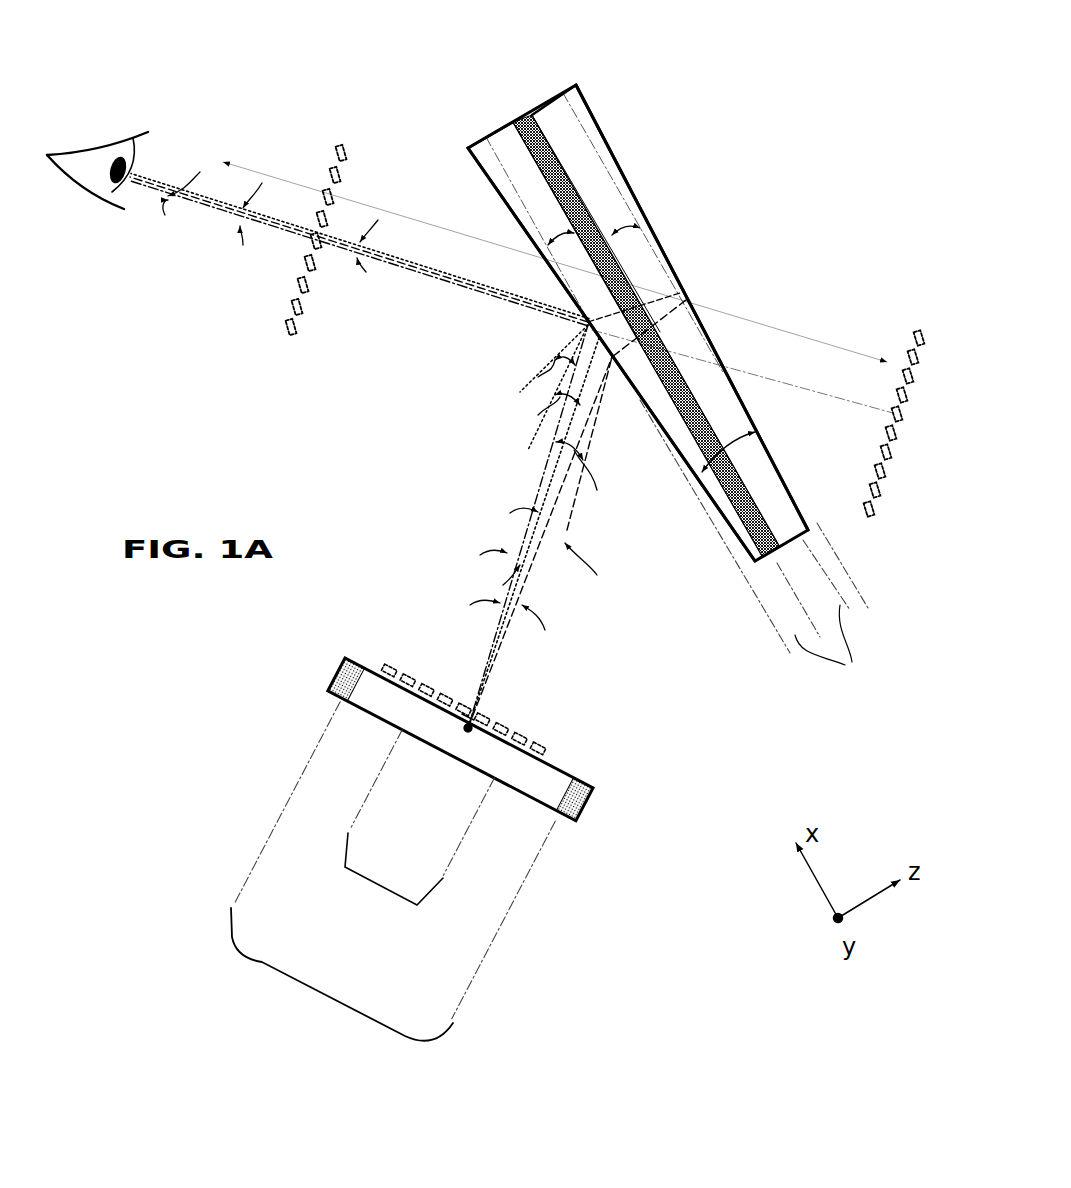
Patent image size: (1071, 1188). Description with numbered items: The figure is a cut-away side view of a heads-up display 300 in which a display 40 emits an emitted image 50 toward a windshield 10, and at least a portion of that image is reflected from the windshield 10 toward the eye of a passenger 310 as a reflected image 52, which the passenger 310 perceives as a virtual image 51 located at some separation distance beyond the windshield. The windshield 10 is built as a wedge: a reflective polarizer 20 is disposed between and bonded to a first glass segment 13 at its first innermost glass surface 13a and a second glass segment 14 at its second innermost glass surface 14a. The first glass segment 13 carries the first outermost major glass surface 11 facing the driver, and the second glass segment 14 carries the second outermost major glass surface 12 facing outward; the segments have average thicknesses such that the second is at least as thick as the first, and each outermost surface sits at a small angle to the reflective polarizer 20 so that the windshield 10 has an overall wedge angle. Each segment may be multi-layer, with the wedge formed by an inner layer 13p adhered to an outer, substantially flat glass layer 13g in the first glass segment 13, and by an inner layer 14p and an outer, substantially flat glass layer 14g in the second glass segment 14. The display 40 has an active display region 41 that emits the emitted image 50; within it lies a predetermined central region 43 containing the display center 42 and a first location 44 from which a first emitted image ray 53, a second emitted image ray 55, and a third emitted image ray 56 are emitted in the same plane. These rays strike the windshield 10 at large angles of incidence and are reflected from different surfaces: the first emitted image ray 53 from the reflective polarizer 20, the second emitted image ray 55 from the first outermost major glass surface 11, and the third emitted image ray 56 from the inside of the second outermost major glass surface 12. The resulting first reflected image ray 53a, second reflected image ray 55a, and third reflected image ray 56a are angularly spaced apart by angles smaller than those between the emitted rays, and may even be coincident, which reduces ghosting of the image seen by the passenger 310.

The heads-up display 300 is at (348, 85).
The passenger 310 is at (90, 147).
The windshield 10 is at (661, 368).
The first outermost major glass surface 11 is at (702, 492).
The second outermost major glass surface 12 is at (640, 208).
The first glass segment 13 is at (573, 313).
The inner layer 13p is at (512, 155).
The outer, substantially flat glass layer 13g is at (500, 180).
The first innermost glass surface 13a is at (535, 175).
The second glass segment 14 is at (662, 290).
The inner layer 14p is at (598, 120).
The outer, substantially flat glass layer 14g is at (577, 108).
The second innermost glass surface 14a is at (552, 155).
The reflective polarizer 20 is at (522, 112).
The display 40 is at (445, 856).
The active display region 41 is at (321, 996).
The display center 42 is at (467, 737).
The predetermined central region 43 is at (377, 886).
The first location 44 is at (468, 722).
The emitted image 50 is at (562, 752).
The virtual image 51 is at (928, 328).
The reflected image 52 is at (287, 337).
The first emitted image ray 53 is at (522, 580).
The first reflected image ray 53a is at (418, 290).
The second emitted image ray 55 is at (492, 628).
The second reflected image ray 55a is at (203, 185).
The third emitted image ray 56 is at (612, 417).
The third reflected image ray 56a is at (288, 240).